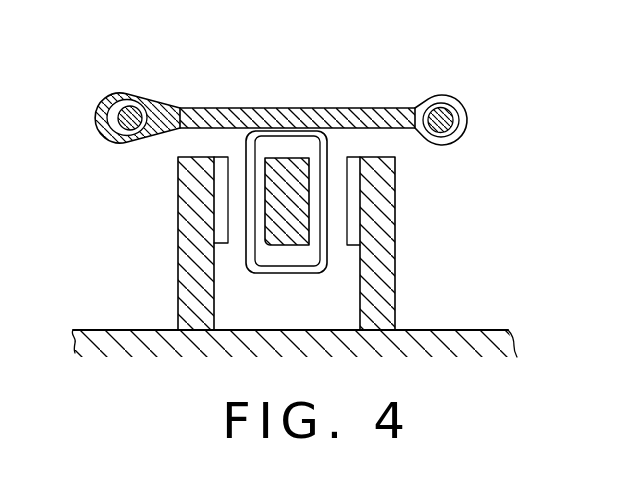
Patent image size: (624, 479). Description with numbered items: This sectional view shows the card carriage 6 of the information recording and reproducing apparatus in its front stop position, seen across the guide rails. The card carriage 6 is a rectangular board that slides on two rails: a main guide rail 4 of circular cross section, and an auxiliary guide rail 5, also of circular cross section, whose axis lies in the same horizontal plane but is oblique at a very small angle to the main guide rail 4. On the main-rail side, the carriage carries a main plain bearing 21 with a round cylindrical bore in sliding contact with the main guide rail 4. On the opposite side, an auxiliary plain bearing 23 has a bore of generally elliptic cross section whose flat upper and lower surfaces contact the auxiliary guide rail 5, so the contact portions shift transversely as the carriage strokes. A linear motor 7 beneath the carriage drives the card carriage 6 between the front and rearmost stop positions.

The main guide rail 4 is at (448, 123).
The auxiliary guide rail 5 is at (123, 121).
The card carriage 6 is at (254, 107).
The linear motor 7 is at (297, 245).
The main plain bearing 21 is at (452, 98).
The auxiliary plain bearing 23 is at (125, 92).